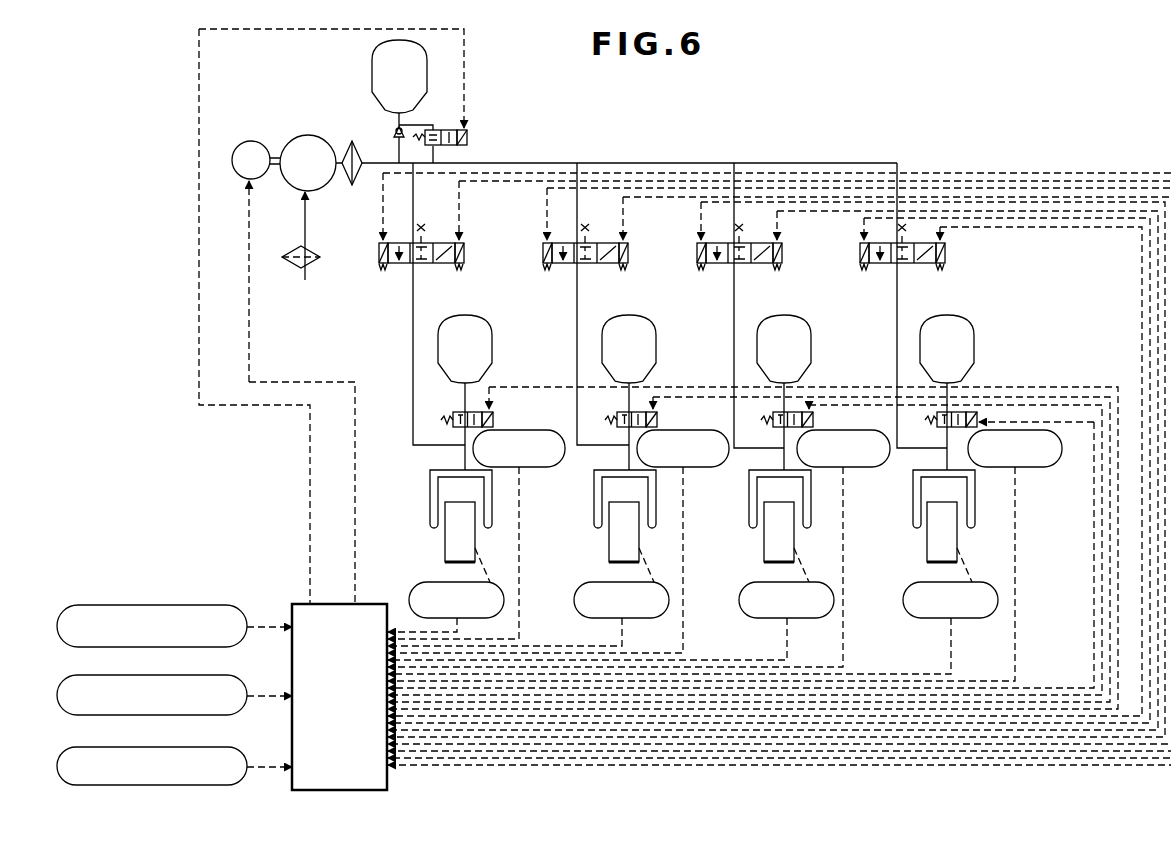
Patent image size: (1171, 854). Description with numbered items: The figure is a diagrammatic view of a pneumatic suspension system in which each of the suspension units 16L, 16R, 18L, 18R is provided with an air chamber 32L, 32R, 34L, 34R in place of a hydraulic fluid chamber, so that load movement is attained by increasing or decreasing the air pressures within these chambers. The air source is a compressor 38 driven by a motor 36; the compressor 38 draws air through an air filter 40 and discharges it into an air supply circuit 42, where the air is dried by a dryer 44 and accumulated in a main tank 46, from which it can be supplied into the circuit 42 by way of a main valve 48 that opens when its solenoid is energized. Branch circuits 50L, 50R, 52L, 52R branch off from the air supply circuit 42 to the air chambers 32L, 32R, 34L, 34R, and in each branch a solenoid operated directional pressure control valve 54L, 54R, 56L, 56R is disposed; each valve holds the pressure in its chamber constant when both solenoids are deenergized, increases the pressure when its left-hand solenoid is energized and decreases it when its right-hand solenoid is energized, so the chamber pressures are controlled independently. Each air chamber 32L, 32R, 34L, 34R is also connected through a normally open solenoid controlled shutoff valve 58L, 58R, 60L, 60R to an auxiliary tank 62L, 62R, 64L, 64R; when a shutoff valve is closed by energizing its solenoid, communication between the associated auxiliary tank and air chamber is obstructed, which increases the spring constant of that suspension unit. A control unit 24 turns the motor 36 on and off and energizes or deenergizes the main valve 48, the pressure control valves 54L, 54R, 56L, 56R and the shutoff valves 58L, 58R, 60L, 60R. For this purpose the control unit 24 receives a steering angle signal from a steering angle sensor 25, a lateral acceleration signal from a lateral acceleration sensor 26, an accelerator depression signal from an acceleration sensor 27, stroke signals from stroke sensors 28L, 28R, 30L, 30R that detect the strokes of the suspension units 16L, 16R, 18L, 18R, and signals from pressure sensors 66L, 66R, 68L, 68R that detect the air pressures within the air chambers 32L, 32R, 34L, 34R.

The suspension unit 16L is at (445, 540).
The suspension unit 16R is at (609, 540).
The suspension unit 18L is at (764, 548).
The suspension unit 18R is at (927, 548).
The control unit 24 is at (297, 604).
The steering angle sensor 25 is at (105, 605).
The lateral acceleration sensor 26 is at (130, 675).
The acceleration sensor 27 is at (122, 747).
The stroke sensor 28L is at (430, 582).
The stroke sensor 28R is at (590, 582).
The stroke sensor 30L is at (760, 583).
The stroke sensor 30R is at (920, 583).
The air chamber 32L is at (440, 485).
The air chamber 32R is at (605, 485).
The air chamber 34L is at (770, 490).
The air chamber 34R is at (935, 490).
The motor 36 is at (249, 141).
The compressor 38 is at (305, 135).
The air filter 40 is at (292, 265).
The air supply circuit 42 is at (517, 163).
The dryer 44 is at (346, 178).
The main tank 46 is at (372, 68).
The main valve 48 is at (469, 136).
The branch circuit 50L is at (413, 335).
The branch circuit 50R is at (577, 312).
The branch circuit 52L is at (734, 340).
The branch circuit 52R is at (897, 333).
The pressure control valve 54L is at (385, 265).
The pressure control valve 54R is at (600, 265).
The pressure control valve 56L is at (746, 265).
The pressure control valve 56R is at (912, 265).
The shutoff valve 58L is at (455, 418).
The shutoff valve 58R is at (620, 418).
The shutoff valve 60L is at (775, 430).
The shutoff valve 60R is at (940, 430).
The auxiliary tank 62L is at (445, 316).
The auxiliary tank 62R is at (648, 327).
The auxiliary tank 64L is at (803, 328).
The auxiliary tank 64R is at (970, 330).
The pressure sensor 66L is at (522, 430).
The pressure sensor 66R is at (688, 430).
The pressure sensor 68L is at (845, 432).
The pressure sensor 68R is at (1040, 470).